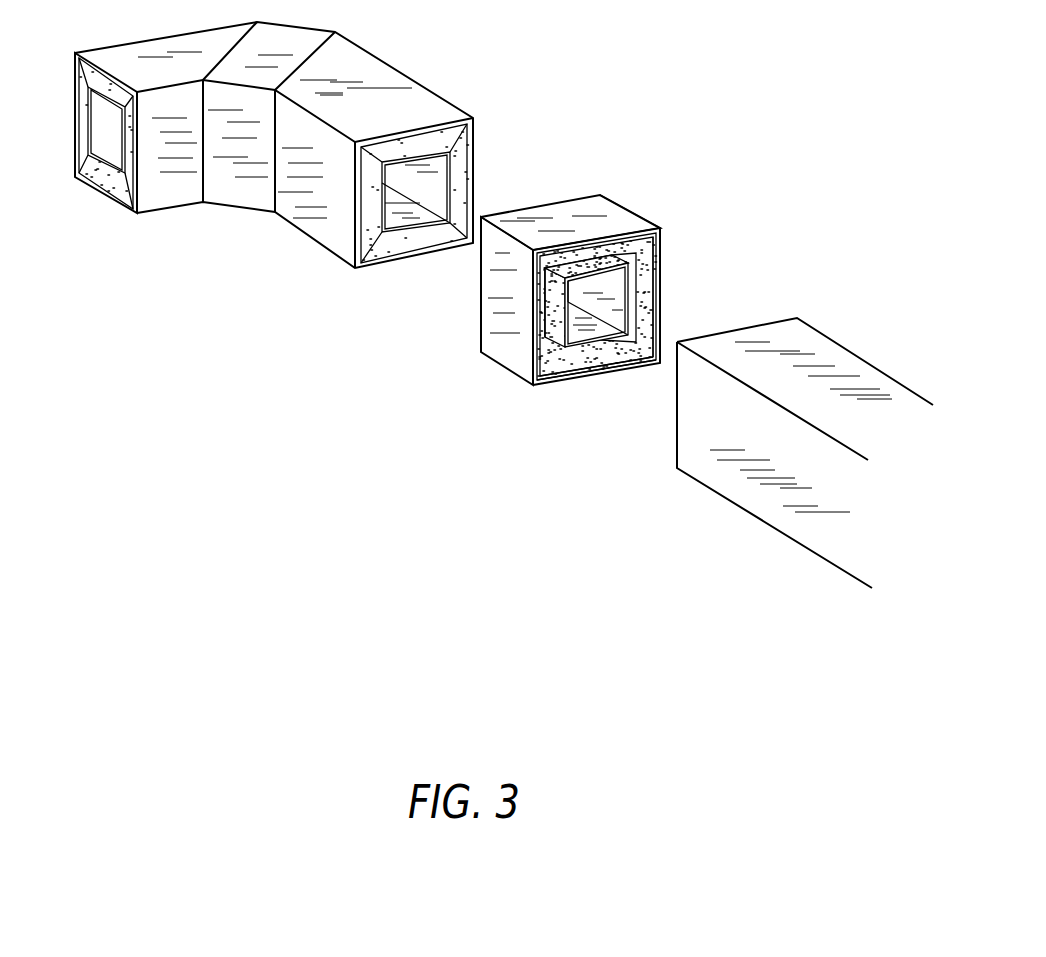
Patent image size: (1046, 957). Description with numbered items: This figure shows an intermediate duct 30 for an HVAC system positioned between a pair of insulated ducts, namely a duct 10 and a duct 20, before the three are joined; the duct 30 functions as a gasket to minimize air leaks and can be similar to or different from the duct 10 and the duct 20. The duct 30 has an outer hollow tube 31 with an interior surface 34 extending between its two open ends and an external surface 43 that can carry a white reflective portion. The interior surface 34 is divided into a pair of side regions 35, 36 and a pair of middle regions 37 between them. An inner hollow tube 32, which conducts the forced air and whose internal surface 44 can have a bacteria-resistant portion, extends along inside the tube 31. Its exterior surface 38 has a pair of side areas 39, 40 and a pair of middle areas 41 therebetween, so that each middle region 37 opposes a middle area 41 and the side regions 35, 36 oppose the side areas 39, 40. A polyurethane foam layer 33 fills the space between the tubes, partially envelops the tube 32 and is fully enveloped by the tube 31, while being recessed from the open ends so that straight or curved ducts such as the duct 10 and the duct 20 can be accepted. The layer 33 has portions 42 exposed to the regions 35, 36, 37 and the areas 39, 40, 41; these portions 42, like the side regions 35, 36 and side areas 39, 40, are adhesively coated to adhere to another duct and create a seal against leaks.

The duct 10 is at (730, 565).
The duct 20 is at (235, 247).
The duct 30 is at (565, 278).
The outer hollow tube 31 is at (478, 293).
The inner hollow tube 32 is at (582, 348).
The foam layer 33 is at (613, 347).
The interior surface 34 is at (652, 263).
The side region 35 is at (632, 365).
The side region 36 is at (627, 233).
The middle region 37 is at (656, 243).
The exterior surface 38 is at (548, 338).
The side area 39 is at (547, 310).
The side area 40 is at (637, 298).
The middle area 41 is at (563, 263).
The portions 42 is at (588, 252).
The external surface 43 is at (492, 217).
The internal surface 44 is at (620, 313).